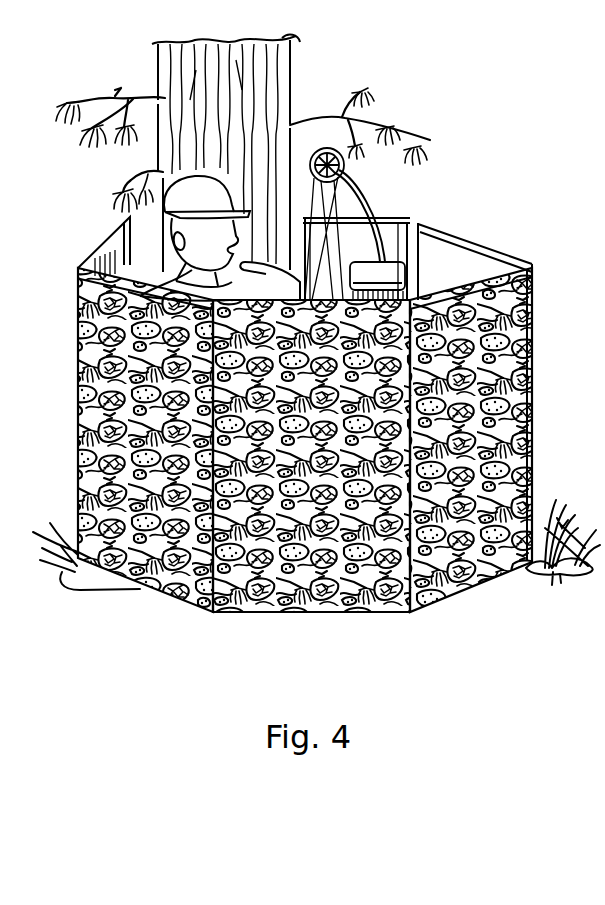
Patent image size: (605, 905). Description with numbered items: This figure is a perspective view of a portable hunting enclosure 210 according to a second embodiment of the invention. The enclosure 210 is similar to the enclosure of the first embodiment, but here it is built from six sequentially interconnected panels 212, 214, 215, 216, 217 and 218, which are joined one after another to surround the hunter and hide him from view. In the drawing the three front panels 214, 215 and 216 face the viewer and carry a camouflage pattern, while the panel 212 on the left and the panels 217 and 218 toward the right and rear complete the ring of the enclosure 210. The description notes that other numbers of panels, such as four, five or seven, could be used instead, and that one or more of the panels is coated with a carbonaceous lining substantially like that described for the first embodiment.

The enclosure 210 is at (125, 627).
The panel 212 is at (103, 252).
The panel 214 is at (165, 449).
The panel 215 is at (334, 449).
The panel 216 is at (496, 449).
The panel 217 is at (490, 250).
The panel 218 is at (407, 222).